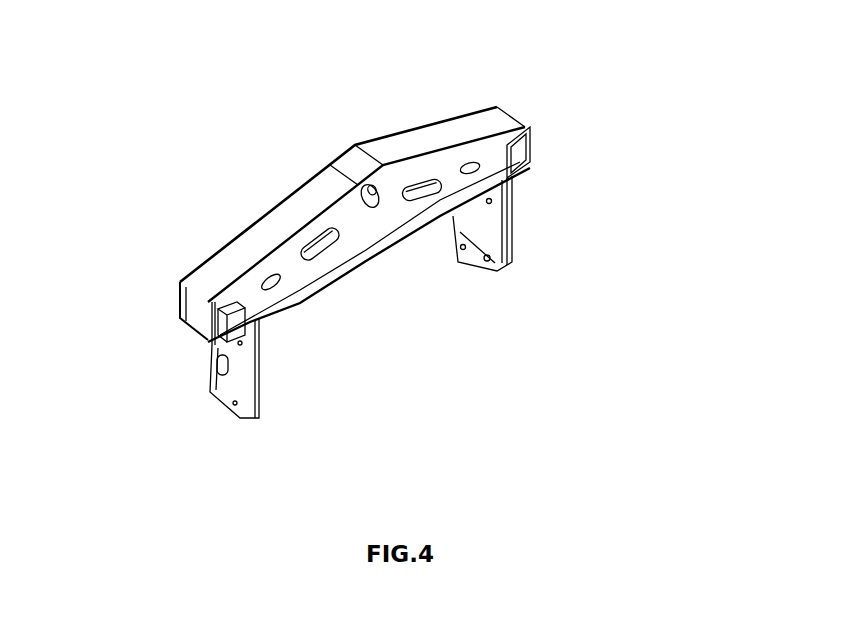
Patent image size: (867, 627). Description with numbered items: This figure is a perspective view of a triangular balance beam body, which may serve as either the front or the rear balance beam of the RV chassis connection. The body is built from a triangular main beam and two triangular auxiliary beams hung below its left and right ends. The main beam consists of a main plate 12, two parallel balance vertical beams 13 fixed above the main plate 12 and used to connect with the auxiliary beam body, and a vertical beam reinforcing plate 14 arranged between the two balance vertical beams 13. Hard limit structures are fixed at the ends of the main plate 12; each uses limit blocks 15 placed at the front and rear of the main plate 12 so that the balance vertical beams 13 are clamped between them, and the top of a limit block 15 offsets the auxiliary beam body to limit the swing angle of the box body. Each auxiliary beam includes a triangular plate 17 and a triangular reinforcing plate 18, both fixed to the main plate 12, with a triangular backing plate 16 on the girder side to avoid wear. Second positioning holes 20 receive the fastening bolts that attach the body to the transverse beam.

The main plate 12 is at (203, 320).
The balance vertical beam 13 is at (448, 174).
The vertical beam reinforcing plate 14 is at (505, 112).
The limit block 15 is at (520, 155).
The triangular backing plate 16 is at (485, 220).
The triangular plate 17 is at (242, 405).
The triangular reinforcing plate 18 is at (215, 360).
The second positioning hole 20 is at (366, 200).